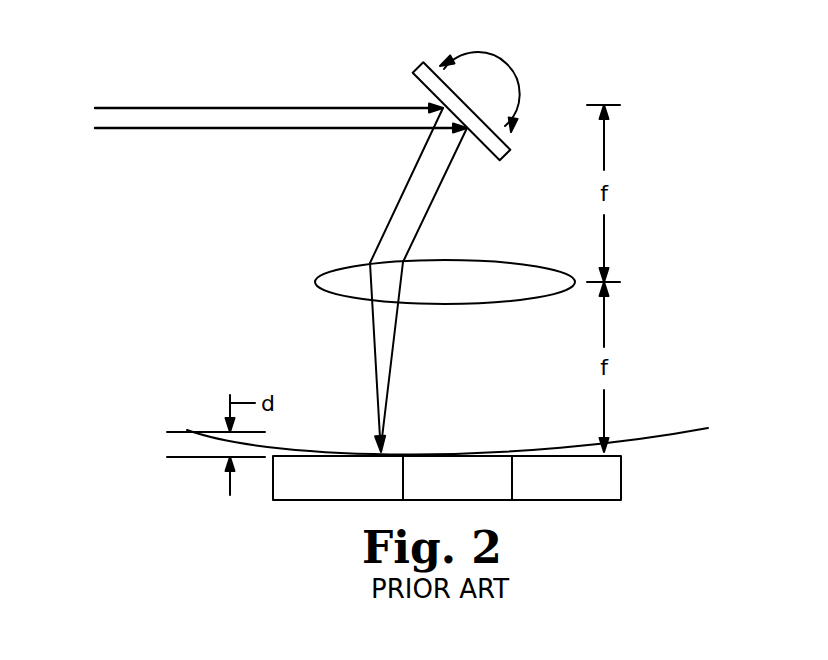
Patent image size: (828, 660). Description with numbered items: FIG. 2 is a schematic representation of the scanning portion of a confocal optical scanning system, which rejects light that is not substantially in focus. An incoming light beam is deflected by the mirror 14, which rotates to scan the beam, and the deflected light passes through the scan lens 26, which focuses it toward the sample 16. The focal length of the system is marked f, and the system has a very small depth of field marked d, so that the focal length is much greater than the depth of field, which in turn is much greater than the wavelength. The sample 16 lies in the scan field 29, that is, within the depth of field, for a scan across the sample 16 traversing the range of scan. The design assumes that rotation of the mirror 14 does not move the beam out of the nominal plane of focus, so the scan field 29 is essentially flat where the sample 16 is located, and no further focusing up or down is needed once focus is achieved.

The mirror 14 is at (425, 73).
The scan lens 26 is at (502, 261).
The scan field 29 is at (675, 441).
The sample 16 is at (603, 477).